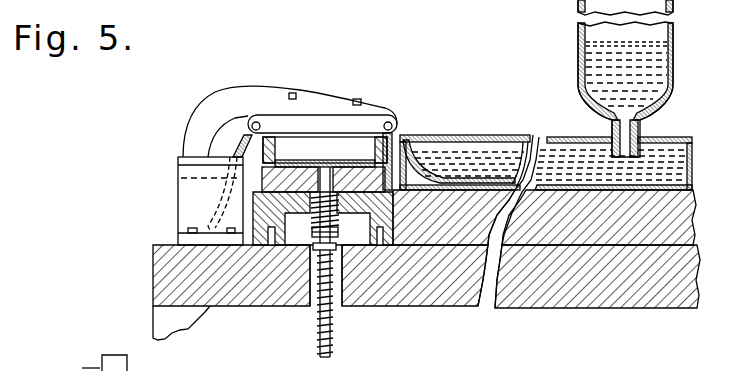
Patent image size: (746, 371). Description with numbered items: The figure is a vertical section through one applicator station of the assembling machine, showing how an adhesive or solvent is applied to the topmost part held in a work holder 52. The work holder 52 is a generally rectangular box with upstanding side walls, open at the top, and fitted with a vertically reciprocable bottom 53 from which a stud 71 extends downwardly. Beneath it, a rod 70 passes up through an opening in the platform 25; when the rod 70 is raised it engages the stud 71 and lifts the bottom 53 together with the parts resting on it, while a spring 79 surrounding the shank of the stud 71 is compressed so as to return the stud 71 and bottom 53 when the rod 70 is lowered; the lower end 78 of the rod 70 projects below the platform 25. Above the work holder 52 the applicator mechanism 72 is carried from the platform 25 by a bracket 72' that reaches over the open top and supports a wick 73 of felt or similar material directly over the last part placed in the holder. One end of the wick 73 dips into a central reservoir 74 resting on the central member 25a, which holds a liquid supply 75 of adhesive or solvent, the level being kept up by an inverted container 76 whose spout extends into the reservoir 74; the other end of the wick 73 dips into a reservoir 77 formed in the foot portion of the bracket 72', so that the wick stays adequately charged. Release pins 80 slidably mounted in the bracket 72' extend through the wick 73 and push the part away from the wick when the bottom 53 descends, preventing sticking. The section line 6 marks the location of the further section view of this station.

The section line 6- 6 is at (388, 72).
The platform 25 is at (428, 287).
The central member 25a is at (613, 250).
The work holder 52 is at (398, 133).
The vertically reciprocable bottom 53 is at (317, 152).
The rod 70 is at (333, 337).
The stud 71 is at (311, 236).
The applicator mechanism 72 is at (270, 121).
The bracket 72' is at (313, 97).
The wick 73 is at (403, 136).
The central reservoir 74 is at (490, 153).
The supply of adhesive or solvent 75 is at (558, 166).
The container 76 is at (578, 56).
The reservoir 77 is at (188, 189).
The screw lower end 78 is at (316, 349).
The spring 79 is at (335, 219).
The release pin 80 is at (292, 93).